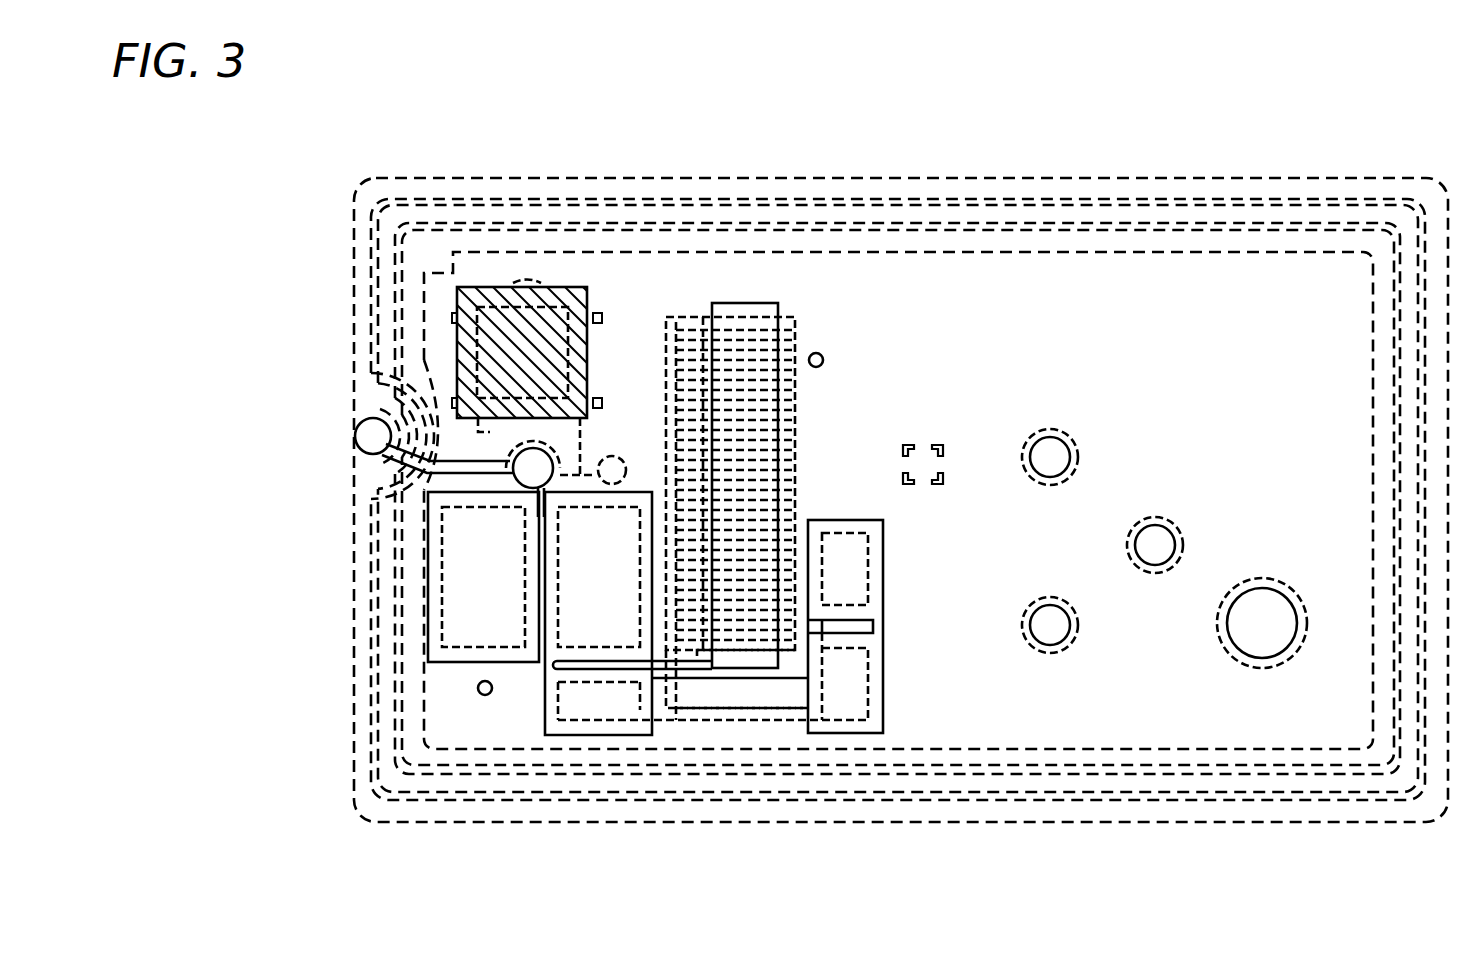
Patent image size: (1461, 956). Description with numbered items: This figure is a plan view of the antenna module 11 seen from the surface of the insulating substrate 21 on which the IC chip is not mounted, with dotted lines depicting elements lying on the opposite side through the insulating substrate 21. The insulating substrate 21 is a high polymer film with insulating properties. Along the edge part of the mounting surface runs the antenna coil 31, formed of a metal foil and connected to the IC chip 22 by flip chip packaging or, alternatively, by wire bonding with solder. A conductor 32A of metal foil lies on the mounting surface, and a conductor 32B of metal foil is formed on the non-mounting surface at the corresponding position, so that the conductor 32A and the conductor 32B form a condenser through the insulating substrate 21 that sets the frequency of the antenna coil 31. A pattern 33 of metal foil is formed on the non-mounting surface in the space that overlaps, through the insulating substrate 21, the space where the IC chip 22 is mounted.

The antenna module 11 is at (968, 869).
The insulating substrate 21 is at (866, 178).
The IC chip 22 is at (551, 305).
The antenna coil 31 is at (1162, 800).
The conductor 32A is at (692, 322).
The conductor 32B is at (756, 303).
The pattern 33 is at (489, 287).